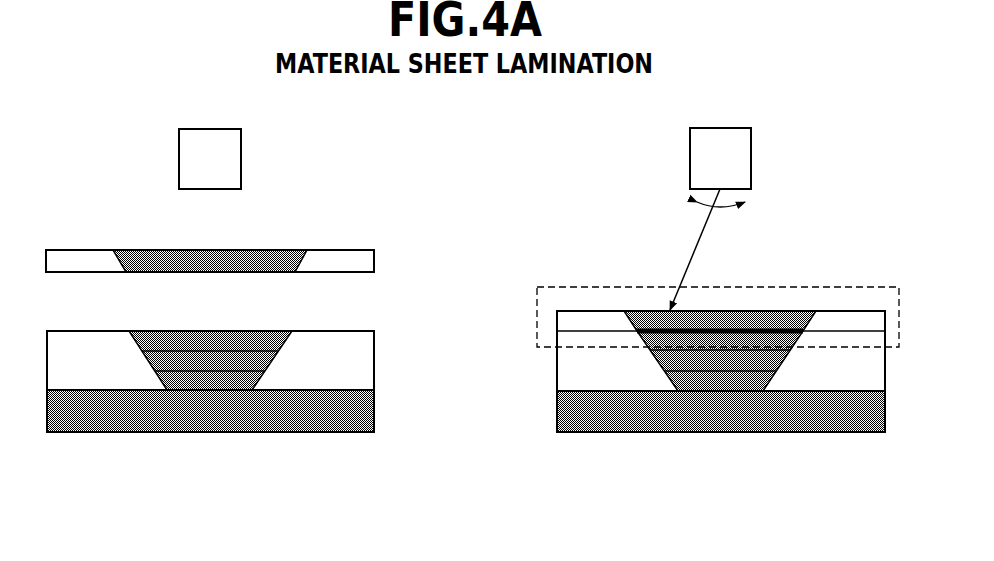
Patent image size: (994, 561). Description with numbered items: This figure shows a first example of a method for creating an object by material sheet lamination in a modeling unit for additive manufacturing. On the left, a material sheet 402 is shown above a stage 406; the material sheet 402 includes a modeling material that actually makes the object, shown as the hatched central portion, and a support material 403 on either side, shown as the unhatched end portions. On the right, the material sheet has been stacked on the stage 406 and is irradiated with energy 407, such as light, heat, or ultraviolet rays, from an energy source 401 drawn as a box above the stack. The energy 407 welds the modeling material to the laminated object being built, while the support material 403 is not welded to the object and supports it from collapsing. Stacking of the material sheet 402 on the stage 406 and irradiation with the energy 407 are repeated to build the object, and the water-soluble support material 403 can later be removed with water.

The energy source 401 is at (690, 162).
The material sheet 402 is at (376, 258).
The support material 403 is at (86, 264).
The stage 406 is at (195, 423).
The energy 407 is at (697, 244).